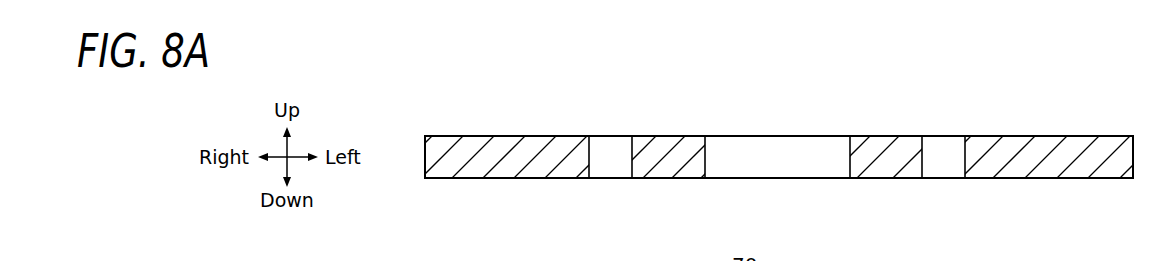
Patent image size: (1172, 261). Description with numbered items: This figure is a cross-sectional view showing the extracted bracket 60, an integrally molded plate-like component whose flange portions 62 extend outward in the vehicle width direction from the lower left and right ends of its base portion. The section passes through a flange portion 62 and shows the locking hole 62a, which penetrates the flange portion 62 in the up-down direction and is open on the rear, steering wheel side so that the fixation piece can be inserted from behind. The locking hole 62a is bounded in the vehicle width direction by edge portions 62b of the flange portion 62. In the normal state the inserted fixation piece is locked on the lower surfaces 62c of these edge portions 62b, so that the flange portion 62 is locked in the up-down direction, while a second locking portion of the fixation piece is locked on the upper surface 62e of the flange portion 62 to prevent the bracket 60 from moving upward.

The bracket 60 is at (776, 117).
The flange portion 62 is at (533, 134).
The locking hole 62a is at (848, 123).
The edge portion 62b is at (668, 158).
The lower surface 62c is at (660, 178).
The upper surface 62e is at (652, 135).